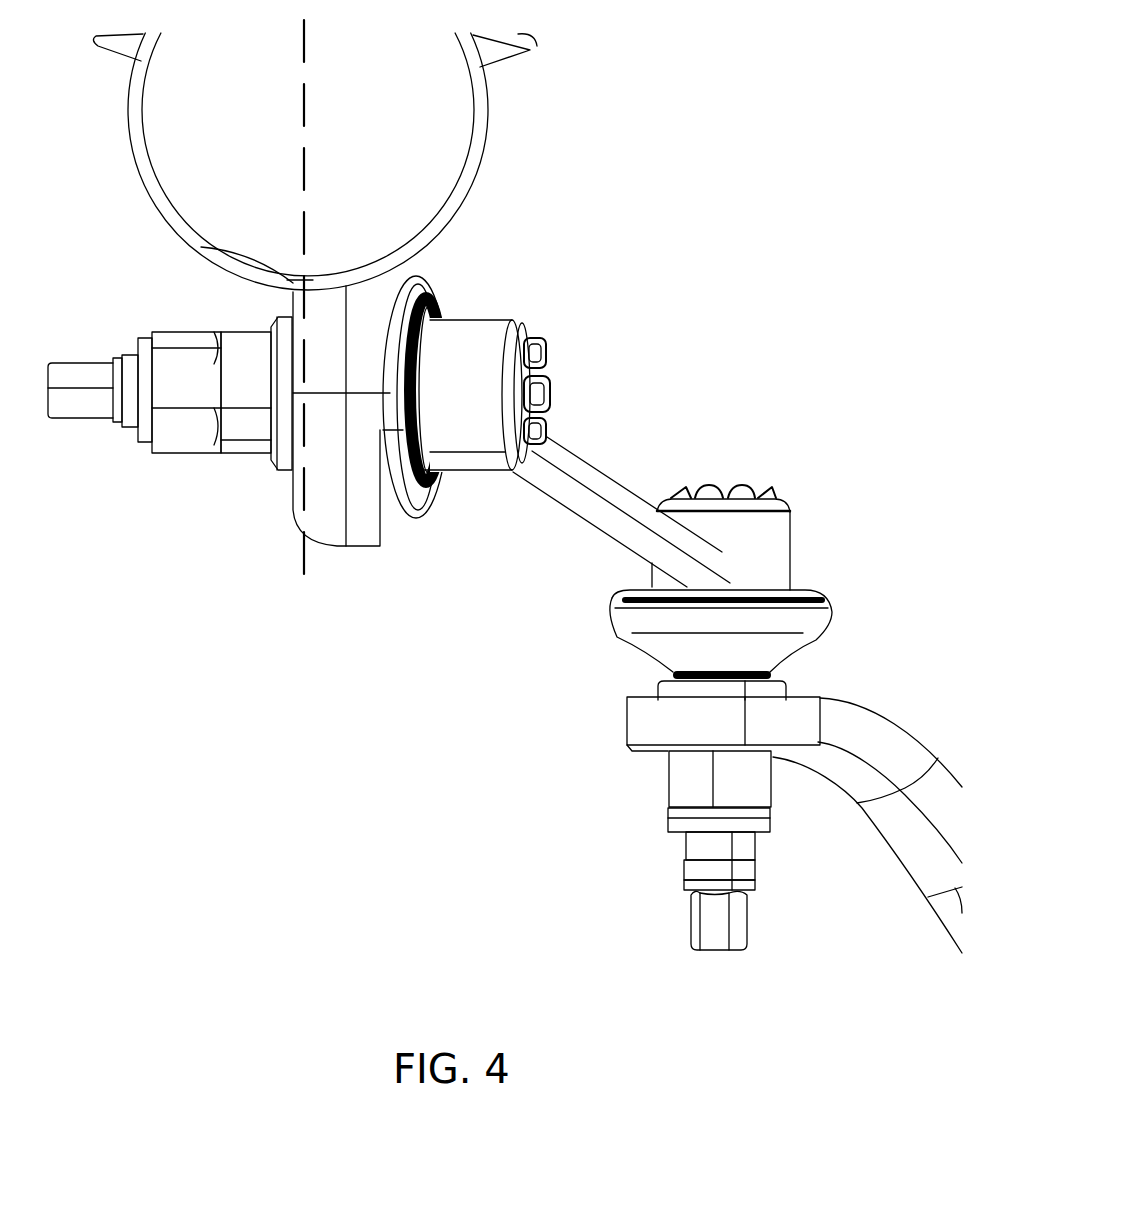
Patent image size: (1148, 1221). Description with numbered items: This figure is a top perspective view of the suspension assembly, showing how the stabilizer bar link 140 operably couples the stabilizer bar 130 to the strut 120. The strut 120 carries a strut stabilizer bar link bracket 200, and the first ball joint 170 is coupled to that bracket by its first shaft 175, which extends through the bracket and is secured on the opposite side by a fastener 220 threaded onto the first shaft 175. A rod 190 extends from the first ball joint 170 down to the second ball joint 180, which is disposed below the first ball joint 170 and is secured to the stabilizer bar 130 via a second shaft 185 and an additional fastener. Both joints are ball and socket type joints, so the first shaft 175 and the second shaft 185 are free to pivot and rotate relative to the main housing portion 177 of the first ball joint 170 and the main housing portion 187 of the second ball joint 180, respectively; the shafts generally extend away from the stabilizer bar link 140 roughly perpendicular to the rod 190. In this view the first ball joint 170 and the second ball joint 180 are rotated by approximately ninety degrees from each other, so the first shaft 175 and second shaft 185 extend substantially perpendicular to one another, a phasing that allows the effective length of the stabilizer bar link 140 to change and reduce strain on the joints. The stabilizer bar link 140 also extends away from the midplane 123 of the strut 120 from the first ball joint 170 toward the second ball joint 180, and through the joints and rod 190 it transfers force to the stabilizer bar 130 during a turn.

The strut 120 is at (487, 127).
The midplane 123 is at (303, 565).
The stabilizer bar 130 is at (887, 843).
The stabilizer bar link 140 is at (630, 439).
The first ball joint 170 is at (475, 358).
The first shaft 175 is at (54, 362).
The main housing portion 177 is at (528, 327).
The second ball joint 180 is at (777, 557).
The second shaft 185 is at (688, 930).
The main housing portion 187 is at (790, 513).
The rod 190 is at (602, 532).
The strut stabilizer bar link bracket 200 is at (365, 548).
The fastener 220 is at (178, 453).